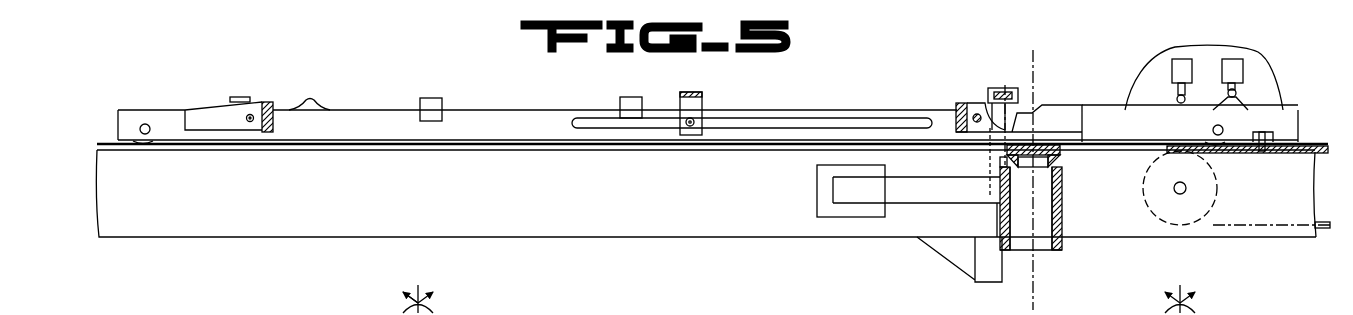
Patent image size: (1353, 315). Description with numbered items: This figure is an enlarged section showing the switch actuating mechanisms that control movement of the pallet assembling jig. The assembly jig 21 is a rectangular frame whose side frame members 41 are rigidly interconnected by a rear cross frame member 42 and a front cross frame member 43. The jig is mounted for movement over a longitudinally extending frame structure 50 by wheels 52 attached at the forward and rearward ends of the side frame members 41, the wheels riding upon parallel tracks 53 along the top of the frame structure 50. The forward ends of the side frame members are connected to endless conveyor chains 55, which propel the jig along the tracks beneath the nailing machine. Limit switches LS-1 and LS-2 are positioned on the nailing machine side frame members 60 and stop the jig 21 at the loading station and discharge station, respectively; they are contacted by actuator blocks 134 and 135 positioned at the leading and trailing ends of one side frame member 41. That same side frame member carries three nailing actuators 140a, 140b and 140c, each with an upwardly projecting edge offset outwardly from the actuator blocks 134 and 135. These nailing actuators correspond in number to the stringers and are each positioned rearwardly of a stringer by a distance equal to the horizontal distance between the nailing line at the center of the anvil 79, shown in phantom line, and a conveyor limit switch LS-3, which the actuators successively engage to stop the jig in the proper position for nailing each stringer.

The assembly jig 21 is at (150, 108).
The side frame member 41 is at (384, 140).
The rear cross frame member 42 is at (263, 135).
The front cross frame member 43 is at (955, 105).
The frame structure 50 is at (118, 236).
The wheel 52 is at (143, 148).
The track 53 is at (108, 145).
The endless conveyor chain 55 is at (1305, 152).
The side frame member of nailing machine 60 is at (1216, 38).
The anvil 79 is at (1062, 152).
The actuator block 134 is at (1242, 103).
The actuator block 135 is at (306, 96).
The nailing actuator 140a is at (617, 100).
The nailing actuator 140b is at (456, 79).
The nailing actuator 140c is at (240, 97).
The limit switch LS-1 is at (1240, 65).
The limit switch LS-2 is at (1184, 59).
The conveyor limit switch LS-3 is at (1010, 88).